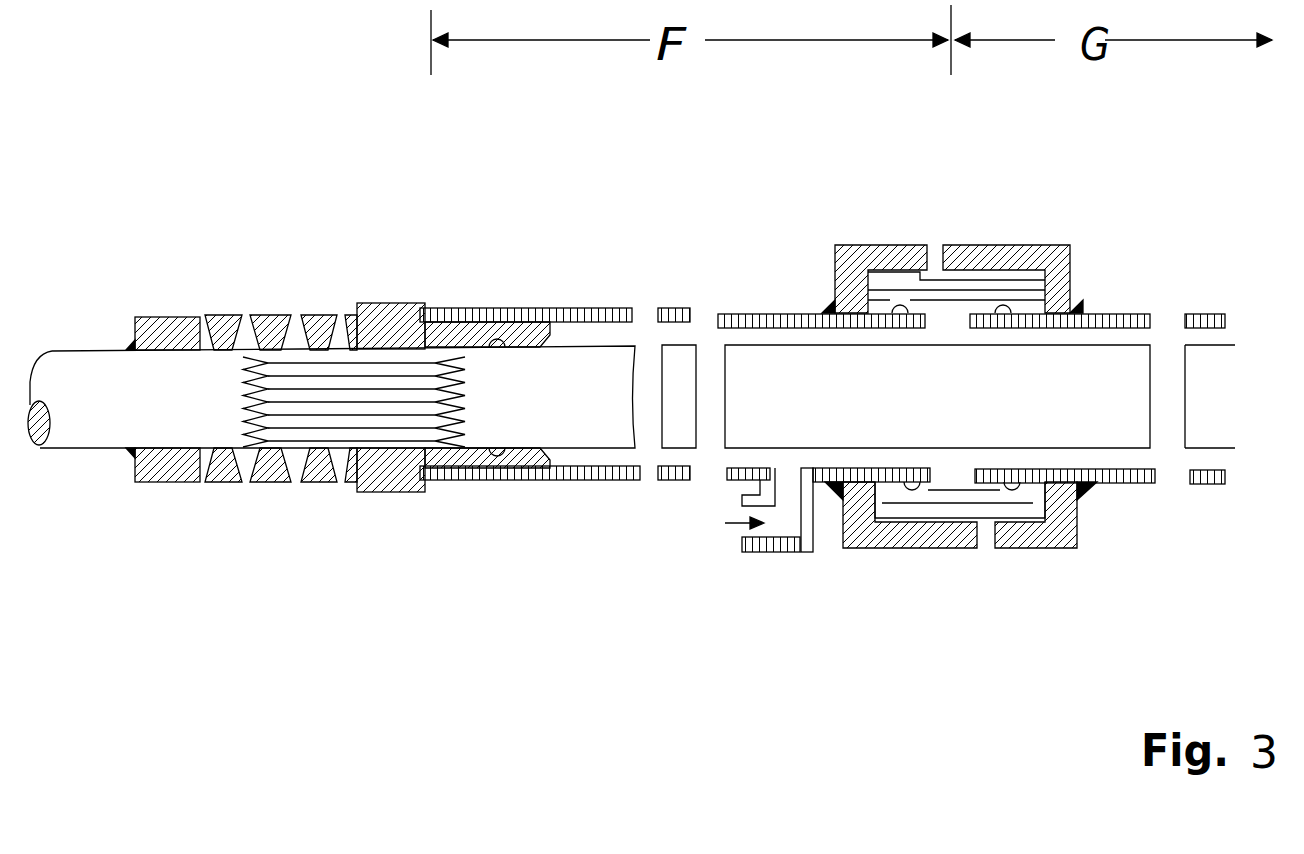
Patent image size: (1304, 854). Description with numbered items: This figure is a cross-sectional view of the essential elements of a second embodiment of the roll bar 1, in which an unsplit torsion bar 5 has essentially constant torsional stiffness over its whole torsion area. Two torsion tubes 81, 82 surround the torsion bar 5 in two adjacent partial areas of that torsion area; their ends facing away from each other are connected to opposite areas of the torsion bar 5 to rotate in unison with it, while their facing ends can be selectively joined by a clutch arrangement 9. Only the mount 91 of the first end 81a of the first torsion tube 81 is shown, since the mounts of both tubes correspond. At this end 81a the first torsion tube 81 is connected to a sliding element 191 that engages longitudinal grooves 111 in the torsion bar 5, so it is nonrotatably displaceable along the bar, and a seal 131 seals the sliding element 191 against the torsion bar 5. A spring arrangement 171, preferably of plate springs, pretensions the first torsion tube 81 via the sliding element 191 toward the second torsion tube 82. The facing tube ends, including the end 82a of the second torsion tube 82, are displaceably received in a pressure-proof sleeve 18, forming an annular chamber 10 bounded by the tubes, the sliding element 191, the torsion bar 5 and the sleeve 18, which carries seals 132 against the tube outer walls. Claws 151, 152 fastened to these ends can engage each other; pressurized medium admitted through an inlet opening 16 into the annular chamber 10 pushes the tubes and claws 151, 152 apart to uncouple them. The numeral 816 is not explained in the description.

The roll bar 1 is at (677, 778).
The unsplit torsion bar 5 is at (78, 365).
The clutch arrangement 9 is at (948, 575).
The annular chamber 10 is at (748, 343).
The inlet opening 16 is at (740, 527).
The pressure-proof sleeve 18 is at (1008, 292).
The first torsion tube 81 is at (611, 308).
The first end of the first torsion tube 81a is at (448, 312).
The second torsion tube 82 is at (1212, 314).
The end of the second torsion tube 82a is at (1133, 313).
The mount 91 is at (318, 537).
The longitudinal grooves 111 is at (336, 360).
The seal 131 is at (497, 340).
The seals 132 is at (998, 305).
The claw 151 is at (860, 248).
The claw 152 is at (962, 248).
The spring arrangement 171 is at (268, 310).
The sliding element 191 is at (402, 305).
The tube end section 816 is at (790, 314).